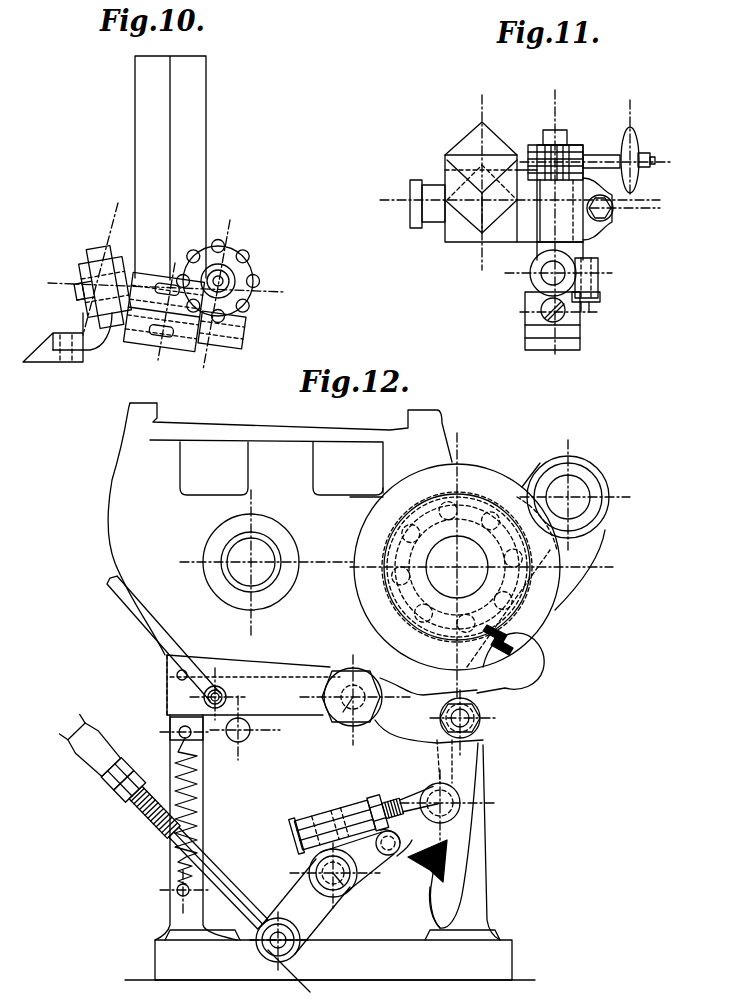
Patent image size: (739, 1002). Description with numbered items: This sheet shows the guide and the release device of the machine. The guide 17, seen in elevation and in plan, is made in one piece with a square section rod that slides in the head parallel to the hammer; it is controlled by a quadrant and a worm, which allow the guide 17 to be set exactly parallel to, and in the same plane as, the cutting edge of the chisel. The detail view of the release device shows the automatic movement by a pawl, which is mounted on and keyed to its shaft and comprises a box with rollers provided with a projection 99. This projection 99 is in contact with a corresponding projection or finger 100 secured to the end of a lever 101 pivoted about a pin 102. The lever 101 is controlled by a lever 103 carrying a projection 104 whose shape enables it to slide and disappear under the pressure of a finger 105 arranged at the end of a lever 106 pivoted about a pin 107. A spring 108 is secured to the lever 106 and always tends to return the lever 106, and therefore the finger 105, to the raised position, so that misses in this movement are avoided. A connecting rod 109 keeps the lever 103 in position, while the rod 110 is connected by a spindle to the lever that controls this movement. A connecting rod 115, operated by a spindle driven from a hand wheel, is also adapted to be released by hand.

In FIG. 10, the guide 17 is at (44, 362).
In FIG. 11, the guide 17 is at (570, 333).
In FIG. 12, the projection 99 is at (490, 630).
In FIG. 12, the projection or finger 100 is at (523, 655).
In FIG. 12, the lever 101 is at (475, 722).
In FIG. 12, the pin 102 is at (349, 720).
In FIG. 12, the lever 103 is at (458, 840).
In FIG. 12, the projection 104 is at (440, 885).
In FIG. 12, the finger 105 is at (422, 861).
In FIG. 12, the lever 106 is at (338, 876).
In FIG. 12, the pin 107 is at (333, 903).
In FIG. 12, the spring 108 is at (383, 848).
In FIG. 12, the connecting rod 109 is at (392, 812).
In FIG. 12, the rod 110 is at (197, 845).
In FIG. 12, the connecting rod 115 is at (140, 615).